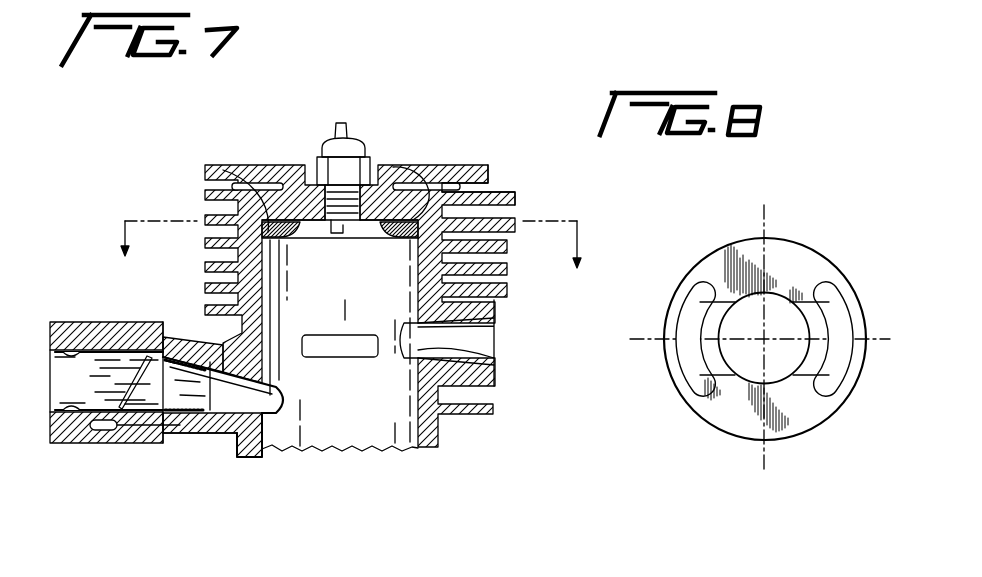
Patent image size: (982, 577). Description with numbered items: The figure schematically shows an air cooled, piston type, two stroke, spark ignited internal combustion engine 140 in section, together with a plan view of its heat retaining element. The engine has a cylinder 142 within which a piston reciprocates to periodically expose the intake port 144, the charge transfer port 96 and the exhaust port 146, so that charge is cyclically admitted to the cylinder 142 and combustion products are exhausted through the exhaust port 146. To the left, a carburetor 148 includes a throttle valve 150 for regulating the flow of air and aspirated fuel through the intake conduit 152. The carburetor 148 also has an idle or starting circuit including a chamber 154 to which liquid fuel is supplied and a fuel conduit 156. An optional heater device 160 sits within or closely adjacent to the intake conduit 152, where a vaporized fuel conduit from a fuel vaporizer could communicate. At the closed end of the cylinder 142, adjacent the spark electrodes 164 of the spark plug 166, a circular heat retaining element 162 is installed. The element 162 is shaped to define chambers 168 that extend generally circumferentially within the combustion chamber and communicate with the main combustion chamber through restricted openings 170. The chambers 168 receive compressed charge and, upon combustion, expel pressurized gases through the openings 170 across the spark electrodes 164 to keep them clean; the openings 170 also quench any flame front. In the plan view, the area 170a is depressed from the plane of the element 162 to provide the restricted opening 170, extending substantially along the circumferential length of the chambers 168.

In FIG. 7, the internal combustion engine 140 is at (178, 190).
In FIG. 7, the cylinder 142 is at (262, 438).
In FIG. 7, the intake port 144 is at (262, 411).
In FIG. 7, the exhaust port 146 is at (457, 348).
In FIG. 7, the carburetor 148 is at (55, 320).
In FIG. 7, the throttle valve 150 is at (128, 365).
In FIG. 7, the intake conduit 152 is at (222, 345).
In FIG. 7, the chamber 154 is at (100, 435).
In FIG. 7, the fuel conduit 156 is at (175, 443).
In FIG. 7, the heater device 160 is at (202, 433).
In FIG. 7, the heat retaining element 162 is at (208, 167).
In FIG. 8, the heat retaining element 162 is at (783, 240).
In FIG. 7, the spark electrodes 164 is at (332, 240).
In FIG. 7, the spark plug 166 is at (353, 147).
In FIG. 7, the chambers 168 is at (482, 167).
In FIG. 8, the chambers 168 is at (682, 372).
In FIG. 7, the restricted openings 170 is at (400, 168).
In FIG. 8, the depressed area 170a is at (817, 365).
In FIG. 7, the charge transfer port 96 is at (340, 348).